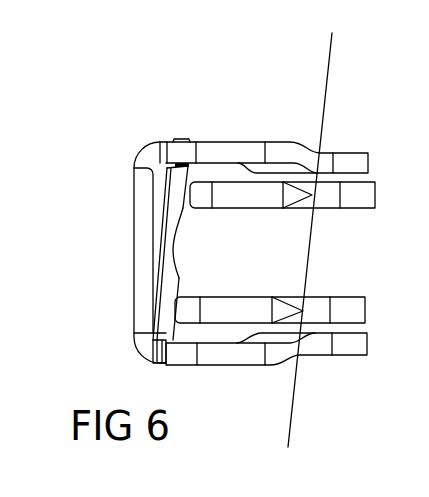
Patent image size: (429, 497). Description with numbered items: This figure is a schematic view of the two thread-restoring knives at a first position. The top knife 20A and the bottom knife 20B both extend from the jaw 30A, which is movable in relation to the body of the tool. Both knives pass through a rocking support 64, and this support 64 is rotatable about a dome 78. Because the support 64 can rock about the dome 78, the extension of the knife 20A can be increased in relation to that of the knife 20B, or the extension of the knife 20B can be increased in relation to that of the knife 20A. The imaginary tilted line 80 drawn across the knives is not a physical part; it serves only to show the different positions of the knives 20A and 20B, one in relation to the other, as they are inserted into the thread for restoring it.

The imaginary tilted line 80 is at (333, 51).
The jaw 30A is at (140, 203).
The top knife 20A is at (312, 196).
The bottom knife 20B is at (308, 312).
The dome 78 is at (158, 253).
The rocking support 64 is at (186, 211).